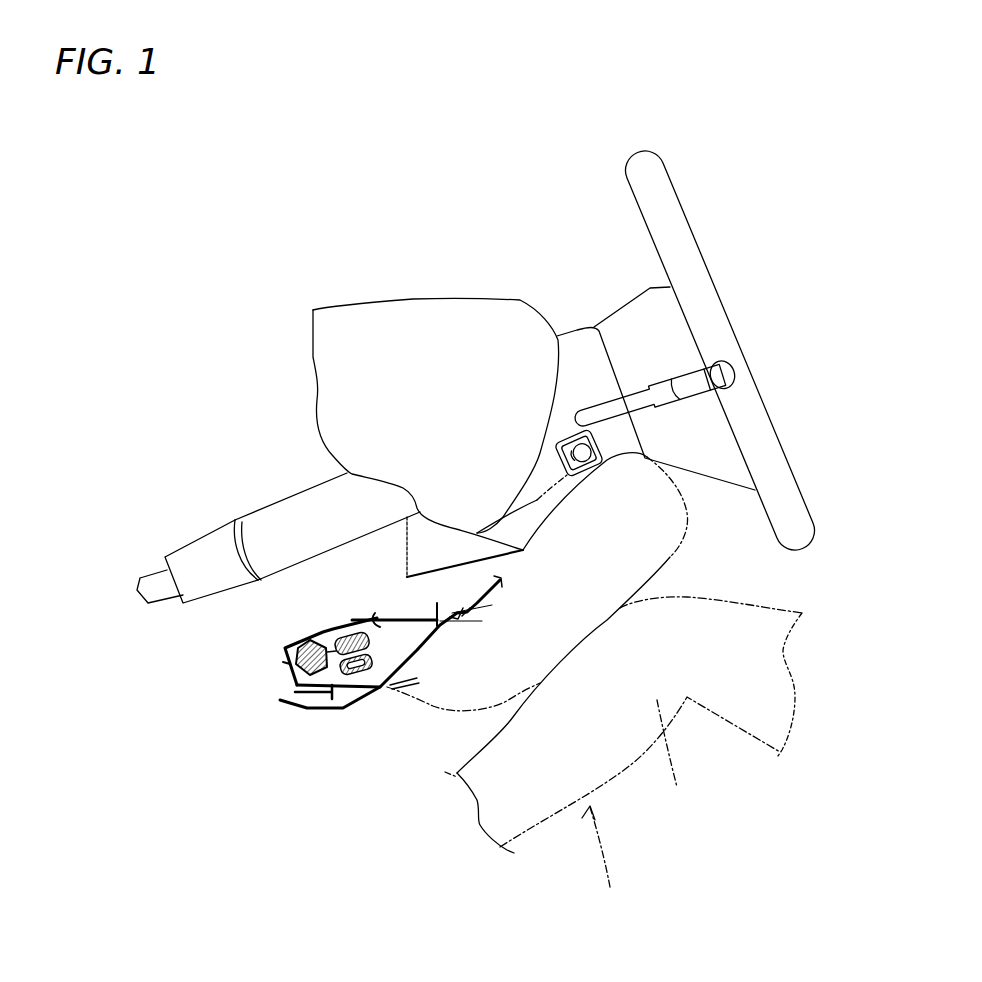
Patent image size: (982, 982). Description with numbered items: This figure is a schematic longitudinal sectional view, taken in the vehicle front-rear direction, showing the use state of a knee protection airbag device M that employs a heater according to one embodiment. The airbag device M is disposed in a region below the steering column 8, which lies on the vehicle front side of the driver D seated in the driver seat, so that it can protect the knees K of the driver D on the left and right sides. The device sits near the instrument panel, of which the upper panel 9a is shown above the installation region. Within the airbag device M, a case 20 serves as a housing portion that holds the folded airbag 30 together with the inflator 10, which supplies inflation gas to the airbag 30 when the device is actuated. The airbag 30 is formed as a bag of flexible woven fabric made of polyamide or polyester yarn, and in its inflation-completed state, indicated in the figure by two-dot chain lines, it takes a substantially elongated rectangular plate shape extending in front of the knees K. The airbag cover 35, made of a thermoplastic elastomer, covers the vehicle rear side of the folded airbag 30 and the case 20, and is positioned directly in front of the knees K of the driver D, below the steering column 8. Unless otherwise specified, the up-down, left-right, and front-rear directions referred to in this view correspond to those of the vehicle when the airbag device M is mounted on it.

The upper panel 9a is at (478, 312).
The steering column 8 is at (575, 345).
The inflator 10 is at (331, 622).
The case 20 is at (330, 633).
The airbag 30 is at (388, 648).
The airbag cover 35 is at (414, 677).
The knees K is at (623, 653).
The driver D is at (600, 862).
The airbag device M is at (257, 697).